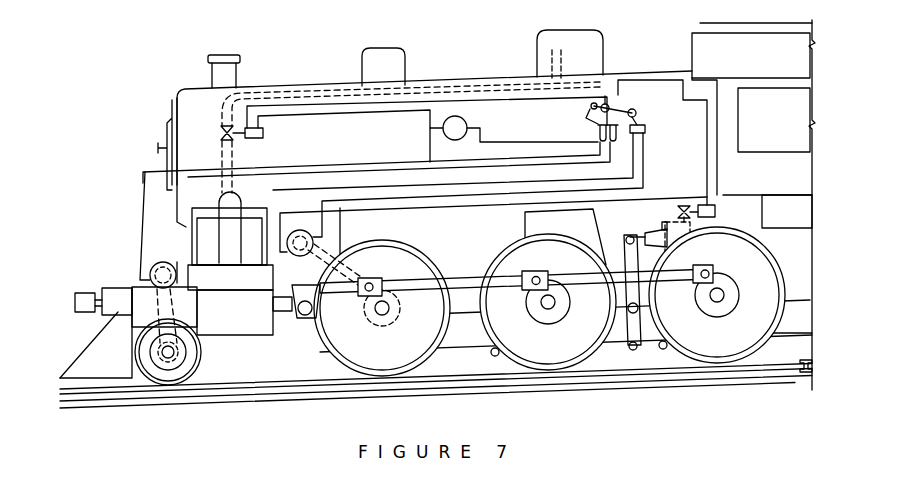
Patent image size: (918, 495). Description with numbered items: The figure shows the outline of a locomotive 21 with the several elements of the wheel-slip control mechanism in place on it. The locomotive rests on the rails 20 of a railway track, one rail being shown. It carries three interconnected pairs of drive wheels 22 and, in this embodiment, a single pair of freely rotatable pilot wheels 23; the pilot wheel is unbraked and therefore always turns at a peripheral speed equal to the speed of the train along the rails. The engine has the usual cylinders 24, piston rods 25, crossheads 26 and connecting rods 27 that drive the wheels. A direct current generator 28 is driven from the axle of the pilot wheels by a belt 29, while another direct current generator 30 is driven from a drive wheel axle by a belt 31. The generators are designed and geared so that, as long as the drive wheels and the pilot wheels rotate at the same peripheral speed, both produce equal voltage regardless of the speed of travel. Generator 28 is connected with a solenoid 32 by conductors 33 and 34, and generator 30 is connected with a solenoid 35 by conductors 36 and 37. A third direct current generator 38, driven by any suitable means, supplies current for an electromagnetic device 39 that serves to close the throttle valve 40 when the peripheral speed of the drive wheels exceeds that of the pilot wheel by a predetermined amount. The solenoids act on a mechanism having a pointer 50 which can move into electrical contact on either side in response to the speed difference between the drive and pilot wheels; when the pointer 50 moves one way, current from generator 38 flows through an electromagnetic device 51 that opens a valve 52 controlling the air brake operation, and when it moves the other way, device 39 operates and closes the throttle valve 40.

The rails 20 is at (285, 392).
The locomotive 21 is at (172, 98).
The drive wheels 22 is at (549, 301).
The pilot wheel 23 is at (186, 363).
The cylinders 24 is at (230, 263).
The piston rods 25 is at (282, 313).
The crossheads 26 is at (306, 300).
The connecting rods 27 is at (466, 290).
The direct current generator 28 is at (166, 262).
The belt 29 is at (160, 310).
The direct current generator 30 is at (302, 230).
The belt 31 is at (312, 265).
The solenoid 32 is at (598, 127).
The conductor 33 is at (343, 151).
The conductor 34 is at (276, 176).
The solenoid 35 is at (641, 126).
The conductor 36 is at (597, 185).
The conductor 37 is at (646, 188).
The direct current generator 38 is at (467, 121).
The electromagnetic device 39 is at (264, 133).
The throttle valve 40 is at (220, 134).
The pointer 50 is at (616, 109).
The electromagnetic device 51 is at (716, 211).
The valve 52 is at (677, 212).